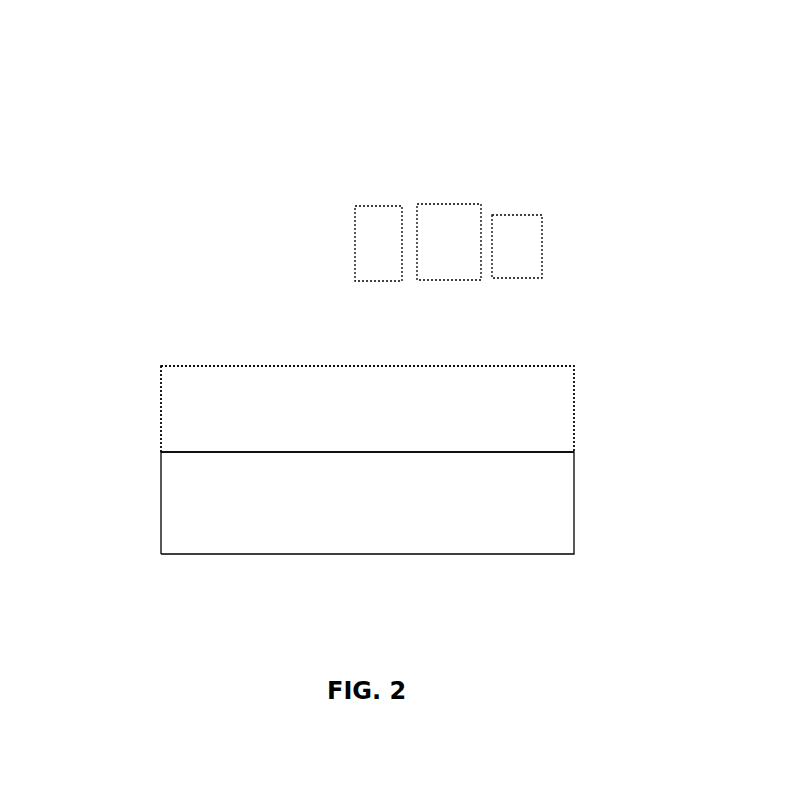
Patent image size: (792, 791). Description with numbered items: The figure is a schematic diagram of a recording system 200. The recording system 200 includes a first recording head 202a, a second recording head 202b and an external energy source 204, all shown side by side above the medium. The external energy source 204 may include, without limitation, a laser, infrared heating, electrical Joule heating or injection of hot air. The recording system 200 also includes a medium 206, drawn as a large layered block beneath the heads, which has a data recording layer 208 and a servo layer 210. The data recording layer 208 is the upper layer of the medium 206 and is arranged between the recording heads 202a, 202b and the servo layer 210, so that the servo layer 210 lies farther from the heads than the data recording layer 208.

The recording system 200 is at (630, 87).
The first recording head 202a is at (373, 204).
The second recording head 202b is at (448, 203).
The external energy source 204 is at (517, 214).
The medium 206 is at (155, 366).
The data recording layer 208 is at (574, 405).
The servo layer 210 is at (574, 505).